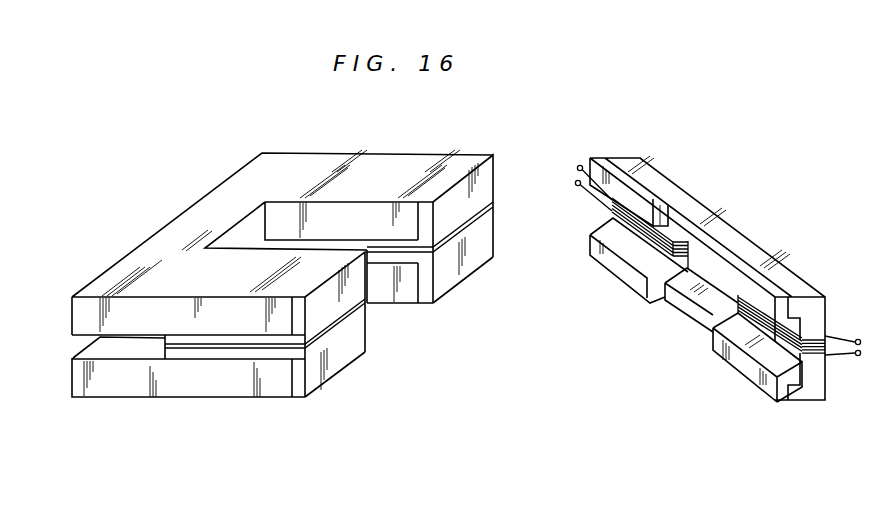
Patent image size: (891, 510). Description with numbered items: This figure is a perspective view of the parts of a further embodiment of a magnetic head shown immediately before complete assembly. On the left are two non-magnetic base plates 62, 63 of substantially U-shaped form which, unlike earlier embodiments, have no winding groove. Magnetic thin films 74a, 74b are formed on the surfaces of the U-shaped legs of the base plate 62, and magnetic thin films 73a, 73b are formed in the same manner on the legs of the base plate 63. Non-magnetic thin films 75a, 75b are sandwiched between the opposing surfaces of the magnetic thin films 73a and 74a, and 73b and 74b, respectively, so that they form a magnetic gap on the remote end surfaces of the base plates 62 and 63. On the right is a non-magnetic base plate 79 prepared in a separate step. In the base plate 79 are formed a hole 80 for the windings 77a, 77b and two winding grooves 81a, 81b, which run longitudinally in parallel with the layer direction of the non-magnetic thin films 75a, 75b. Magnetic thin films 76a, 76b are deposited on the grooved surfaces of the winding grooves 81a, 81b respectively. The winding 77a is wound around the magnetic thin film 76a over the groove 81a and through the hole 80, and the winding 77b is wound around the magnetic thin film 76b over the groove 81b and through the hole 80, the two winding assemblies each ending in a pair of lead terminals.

The non-magnetic base plate 62 is at (160, 265).
The non-magnetic base plate 63 is at (133, 383).
The magnetic thin film 73a is at (285, 378).
The magnetic thin film 73b is at (475, 253).
The magnetic thin film 74a is at (357, 283).
The magnetic thin film 74b is at (483, 188).
The non-magnetic thin film 75a is at (327, 336).
The non-magnetic thin film 75b is at (445, 252).
The magnetic thin film 76a is at (755, 376).
The magnetic thin film 76b is at (598, 165).
The winding 77a is at (845, 360).
The winding 77b is at (572, 190).
The non-magnetic base plate 79 is at (775, 276).
The hole 80 is at (708, 282).
The winding groove 81a is at (805, 327).
The winding groove 81b is at (677, 232).